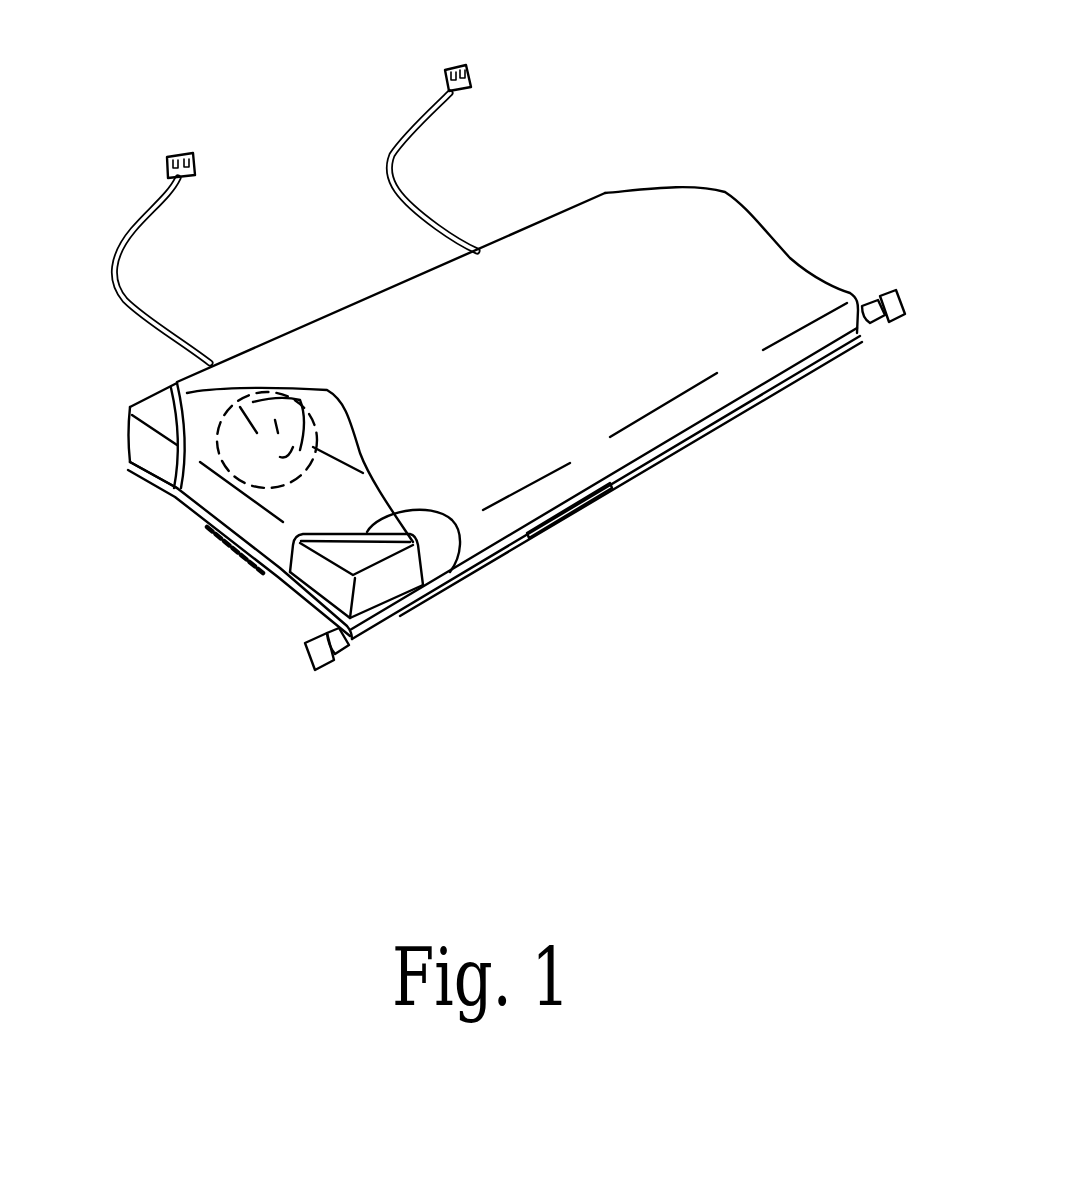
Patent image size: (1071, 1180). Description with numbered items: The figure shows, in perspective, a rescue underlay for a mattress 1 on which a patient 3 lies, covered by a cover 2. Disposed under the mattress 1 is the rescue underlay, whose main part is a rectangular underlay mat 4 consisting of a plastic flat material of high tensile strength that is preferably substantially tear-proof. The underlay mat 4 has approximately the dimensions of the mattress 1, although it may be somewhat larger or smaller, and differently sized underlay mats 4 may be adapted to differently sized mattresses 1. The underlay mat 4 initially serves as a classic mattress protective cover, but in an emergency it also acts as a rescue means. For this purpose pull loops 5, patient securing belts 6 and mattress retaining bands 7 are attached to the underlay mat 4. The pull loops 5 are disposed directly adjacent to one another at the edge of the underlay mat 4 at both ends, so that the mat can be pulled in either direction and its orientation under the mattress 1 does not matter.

The mattress 1 is at (485, 376).
The cover 2 is at (610, 200).
The patient 3 is at (293, 355).
The underlay mat 4 is at (667, 447).
The pull loops 5 is at (233, 552).
The patient securing belts 6 is at (153, 212).
The mattress retaining bands 7 is at (187, 393).